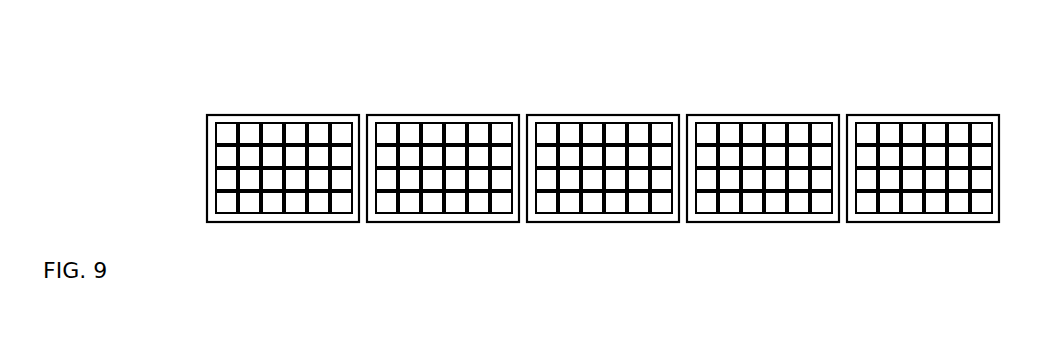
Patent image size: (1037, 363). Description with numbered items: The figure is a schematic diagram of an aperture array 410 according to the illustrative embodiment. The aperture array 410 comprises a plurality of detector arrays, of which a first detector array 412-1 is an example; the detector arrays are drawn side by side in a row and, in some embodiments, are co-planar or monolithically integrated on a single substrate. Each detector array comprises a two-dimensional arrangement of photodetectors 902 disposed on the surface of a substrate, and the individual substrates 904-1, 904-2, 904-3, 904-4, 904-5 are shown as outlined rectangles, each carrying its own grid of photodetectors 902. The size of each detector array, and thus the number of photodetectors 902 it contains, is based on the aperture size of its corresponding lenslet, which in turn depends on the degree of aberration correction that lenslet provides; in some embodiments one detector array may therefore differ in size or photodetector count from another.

The aperture array 410 is at (129, 46).
The substrate 904-1 is at (262, 113).
The substrate 904-2 is at (415, 113).
The substrate 904-3 is at (603, 113).
The substrate 904-4 is at (763, 113).
The substrate 904-5 is at (923, 113).
The photodetector 902 is at (460, 128).
The detector array 412-1 is at (268, 240).